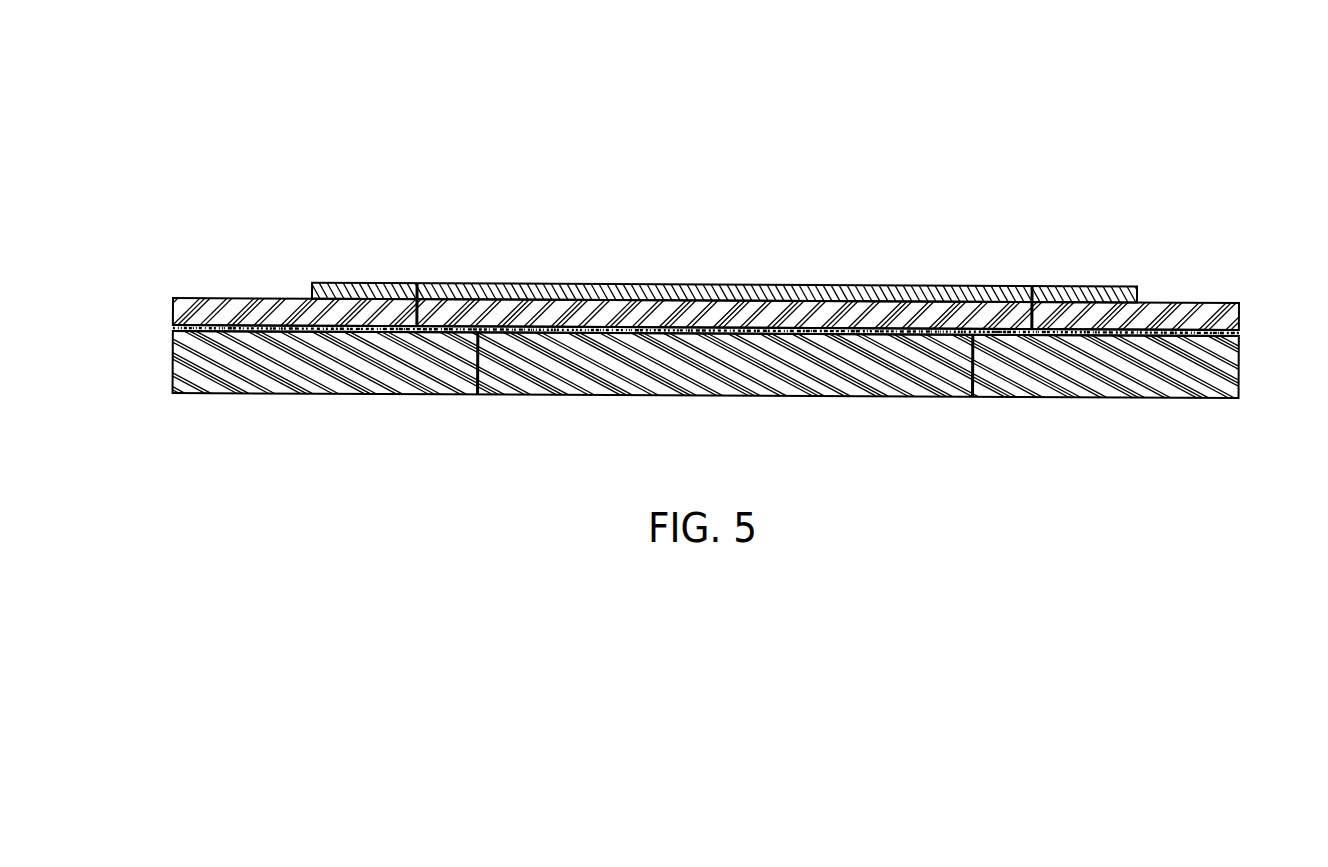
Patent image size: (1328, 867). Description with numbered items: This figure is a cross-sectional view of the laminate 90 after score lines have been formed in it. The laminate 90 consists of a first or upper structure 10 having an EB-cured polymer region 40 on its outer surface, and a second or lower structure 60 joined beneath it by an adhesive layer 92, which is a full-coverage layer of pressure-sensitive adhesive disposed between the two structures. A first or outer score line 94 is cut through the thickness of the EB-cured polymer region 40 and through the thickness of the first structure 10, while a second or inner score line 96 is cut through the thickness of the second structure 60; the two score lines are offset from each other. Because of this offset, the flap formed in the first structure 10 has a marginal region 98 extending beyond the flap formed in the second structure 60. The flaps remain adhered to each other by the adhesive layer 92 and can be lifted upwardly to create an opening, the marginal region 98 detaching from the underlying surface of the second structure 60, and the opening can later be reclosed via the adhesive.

The laminate 90 is at (692, 273).
The first or upper structure 10 is at (1239, 316).
The EB-cured polymer region 40 is at (552, 285).
The second or lower structure 60 is at (1225, 378).
The adhesive layer 92 is at (173, 327).
The first or outer score line 94 is at (404, 305).
The second or inner score line 96 is at (475, 363).
The marginal region 98 is at (1001, 335).